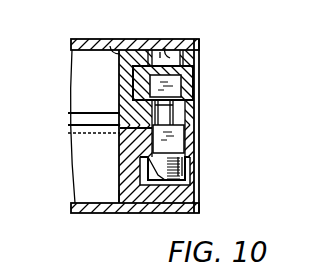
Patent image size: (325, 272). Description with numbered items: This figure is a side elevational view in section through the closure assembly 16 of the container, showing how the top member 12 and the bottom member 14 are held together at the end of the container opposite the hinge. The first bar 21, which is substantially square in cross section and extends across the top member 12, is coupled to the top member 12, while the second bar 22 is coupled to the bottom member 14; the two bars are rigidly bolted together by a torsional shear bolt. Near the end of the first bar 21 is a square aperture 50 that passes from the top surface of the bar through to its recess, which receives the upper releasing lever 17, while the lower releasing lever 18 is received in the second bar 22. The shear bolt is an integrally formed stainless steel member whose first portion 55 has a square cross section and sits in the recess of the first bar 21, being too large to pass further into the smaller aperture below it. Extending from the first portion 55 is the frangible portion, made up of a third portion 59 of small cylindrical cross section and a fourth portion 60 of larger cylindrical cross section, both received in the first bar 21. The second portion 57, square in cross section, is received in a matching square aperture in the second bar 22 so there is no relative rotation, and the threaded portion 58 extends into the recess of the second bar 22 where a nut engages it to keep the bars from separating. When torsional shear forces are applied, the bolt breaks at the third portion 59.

The top member 12 is at (89, 28).
The bottom member 14 is at (80, 226).
The closure assembly 16 is at (206, 61).
The upper releasing lever 17 is at (197, 77).
The lower releasing lever 18 is at (190, 178).
The first bar 21 is at (110, 46).
The second bar 22 is at (117, 193).
The square aperture 50 is at (165, 48).
The first portion 55 is at (128, 84).
The second portion 57 is at (182, 137).
The threaded portion 58 is at (197, 196).
The third portion 59 is at (190, 96).
The fourth portion 60 is at (174, 121).